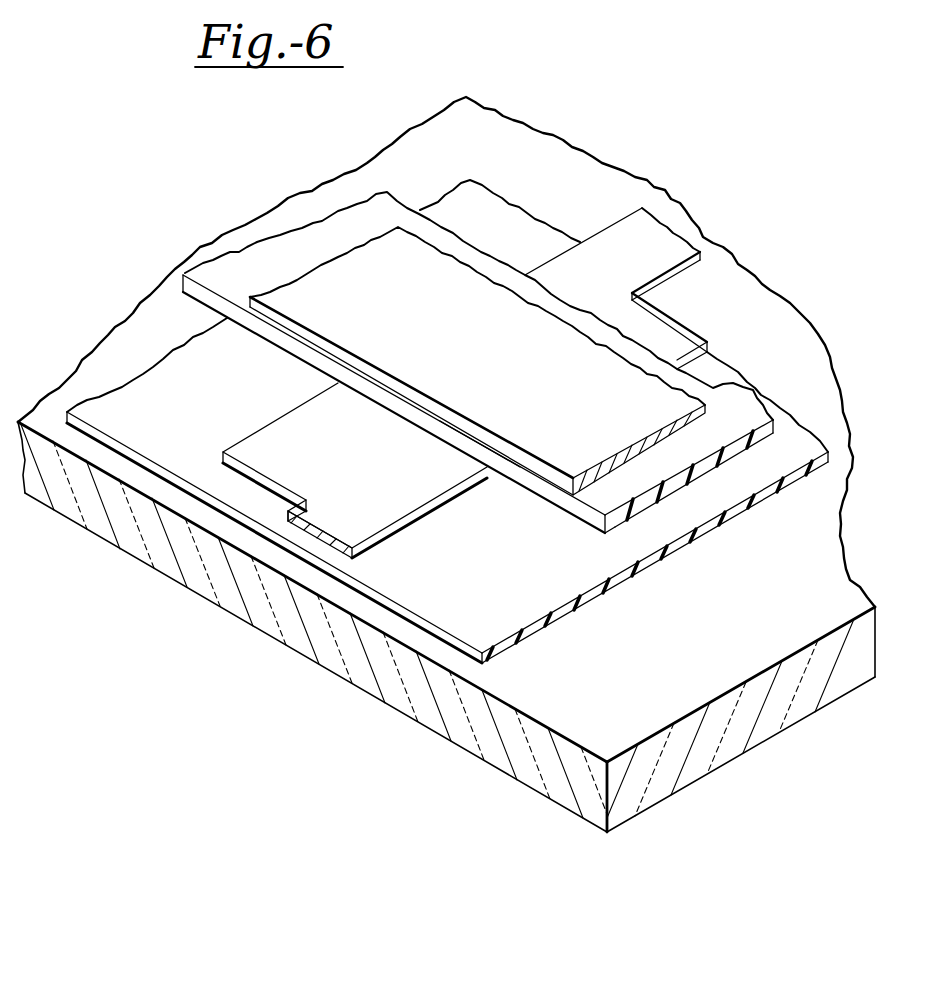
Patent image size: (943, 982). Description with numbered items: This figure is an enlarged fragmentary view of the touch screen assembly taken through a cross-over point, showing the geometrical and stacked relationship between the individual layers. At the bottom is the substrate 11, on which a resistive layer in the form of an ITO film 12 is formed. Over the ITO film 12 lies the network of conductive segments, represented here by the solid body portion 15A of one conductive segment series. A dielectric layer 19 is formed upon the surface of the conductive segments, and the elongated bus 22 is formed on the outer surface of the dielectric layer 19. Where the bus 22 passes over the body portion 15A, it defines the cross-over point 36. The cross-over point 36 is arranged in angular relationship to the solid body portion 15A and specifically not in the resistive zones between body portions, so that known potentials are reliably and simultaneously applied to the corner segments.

The substrate 11 is at (727, 277).
The ITO film 12 is at (538, 592).
The dielectric layer 19 is at (280, 348).
The elongated bus 22 is at (705, 405).
The body portion 15A is at (412, 567).
The cross-over point 36 is at (473, 452).